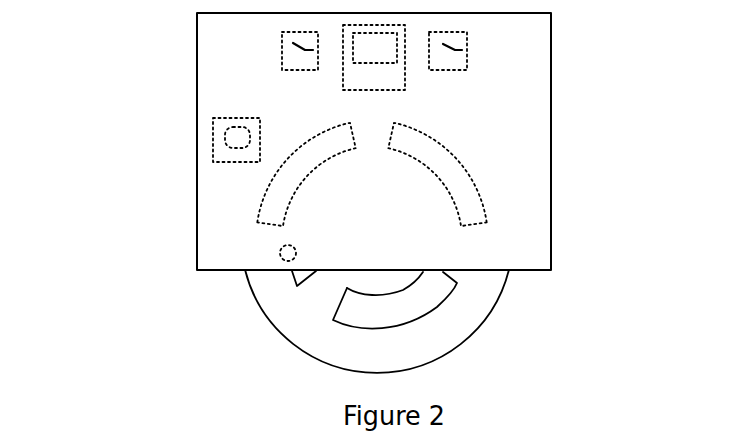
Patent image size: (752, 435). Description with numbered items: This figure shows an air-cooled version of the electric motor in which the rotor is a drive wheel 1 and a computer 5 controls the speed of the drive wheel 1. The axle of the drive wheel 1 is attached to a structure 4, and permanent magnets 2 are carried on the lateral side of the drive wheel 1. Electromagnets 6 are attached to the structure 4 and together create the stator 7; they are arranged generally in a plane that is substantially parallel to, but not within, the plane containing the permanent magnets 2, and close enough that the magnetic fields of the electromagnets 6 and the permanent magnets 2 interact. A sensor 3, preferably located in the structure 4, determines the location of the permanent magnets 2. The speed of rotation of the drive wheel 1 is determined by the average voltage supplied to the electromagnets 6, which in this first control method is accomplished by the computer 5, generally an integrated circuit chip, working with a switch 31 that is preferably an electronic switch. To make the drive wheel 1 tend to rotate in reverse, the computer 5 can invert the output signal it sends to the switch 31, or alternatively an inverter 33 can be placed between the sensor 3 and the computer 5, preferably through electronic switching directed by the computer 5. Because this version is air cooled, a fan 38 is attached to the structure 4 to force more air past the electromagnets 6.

The drive wheel 1 is at (287, 322).
The permanent magnets 2 is at (290, 279).
The sensor 3 is at (280, 252).
The structure 4 is at (533, 78).
The computer 5 is at (395, 79).
The electromagnets 6 is at (288, 165).
The stator 7 is at (322, 113).
The switch 31 is at (292, 62).
The inverter 33 is at (457, 58).
The fan 38 is at (235, 135).